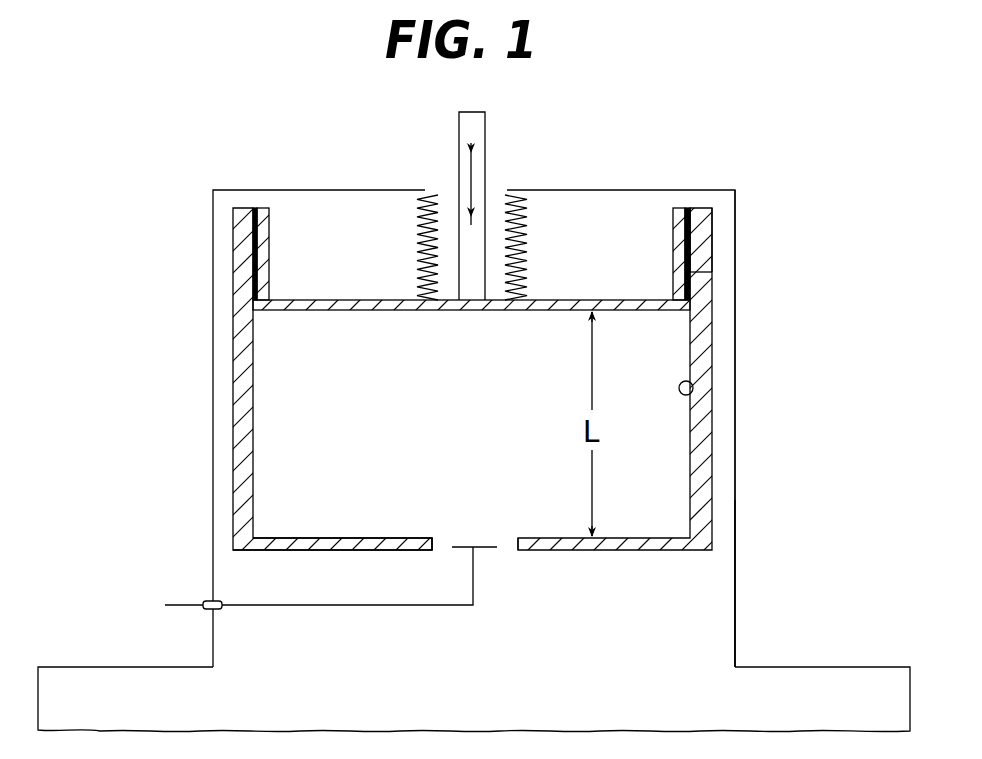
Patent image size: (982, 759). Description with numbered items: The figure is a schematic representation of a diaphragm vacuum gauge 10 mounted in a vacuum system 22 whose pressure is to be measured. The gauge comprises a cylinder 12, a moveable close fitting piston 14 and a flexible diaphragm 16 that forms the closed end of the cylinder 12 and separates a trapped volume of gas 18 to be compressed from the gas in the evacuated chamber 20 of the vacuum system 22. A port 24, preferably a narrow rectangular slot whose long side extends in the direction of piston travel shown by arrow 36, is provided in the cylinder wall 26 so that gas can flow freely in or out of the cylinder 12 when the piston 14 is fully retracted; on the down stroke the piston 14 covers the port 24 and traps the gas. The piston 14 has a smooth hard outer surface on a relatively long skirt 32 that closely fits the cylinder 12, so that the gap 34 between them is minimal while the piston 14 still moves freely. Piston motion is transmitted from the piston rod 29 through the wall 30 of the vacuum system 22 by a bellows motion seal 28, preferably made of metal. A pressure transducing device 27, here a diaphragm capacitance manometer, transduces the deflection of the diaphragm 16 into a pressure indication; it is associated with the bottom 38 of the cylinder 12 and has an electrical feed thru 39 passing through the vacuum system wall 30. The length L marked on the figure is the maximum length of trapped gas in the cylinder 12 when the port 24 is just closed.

The diaphragm vacuum gauge 10 is at (791, 191).
The cylinder 12 is at (716, 428).
The piston 14 is at (637, 314).
The flexible diaphragm 16 is at (440, 550).
The trapped volume of gas 18 is at (334, 426).
The evacuated chamber 20 is at (497, 673).
The vacuum system 22 is at (739, 495).
The port 24 is at (702, 290).
The cylinder wall 26 is at (693, 384).
The pressure transducing device 27 is at (504, 551).
The bellows motion seal 28 is at (529, 231).
The piston rod 29 is at (488, 141).
The wall of the vacuum system 30 is at (739, 556).
The skirt 32 is at (270, 265).
The gap 34 is at (252, 284).
The arrow 36 is at (459, 178).
The bottom of the cylinder 38 is at (355, 538).
The electrical feed thru 39 is at (204, 599).